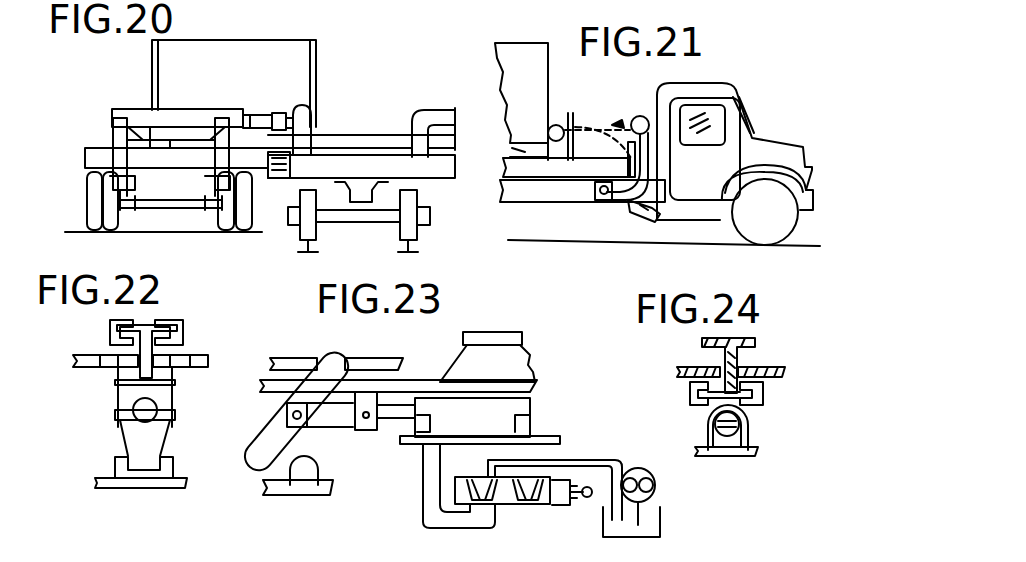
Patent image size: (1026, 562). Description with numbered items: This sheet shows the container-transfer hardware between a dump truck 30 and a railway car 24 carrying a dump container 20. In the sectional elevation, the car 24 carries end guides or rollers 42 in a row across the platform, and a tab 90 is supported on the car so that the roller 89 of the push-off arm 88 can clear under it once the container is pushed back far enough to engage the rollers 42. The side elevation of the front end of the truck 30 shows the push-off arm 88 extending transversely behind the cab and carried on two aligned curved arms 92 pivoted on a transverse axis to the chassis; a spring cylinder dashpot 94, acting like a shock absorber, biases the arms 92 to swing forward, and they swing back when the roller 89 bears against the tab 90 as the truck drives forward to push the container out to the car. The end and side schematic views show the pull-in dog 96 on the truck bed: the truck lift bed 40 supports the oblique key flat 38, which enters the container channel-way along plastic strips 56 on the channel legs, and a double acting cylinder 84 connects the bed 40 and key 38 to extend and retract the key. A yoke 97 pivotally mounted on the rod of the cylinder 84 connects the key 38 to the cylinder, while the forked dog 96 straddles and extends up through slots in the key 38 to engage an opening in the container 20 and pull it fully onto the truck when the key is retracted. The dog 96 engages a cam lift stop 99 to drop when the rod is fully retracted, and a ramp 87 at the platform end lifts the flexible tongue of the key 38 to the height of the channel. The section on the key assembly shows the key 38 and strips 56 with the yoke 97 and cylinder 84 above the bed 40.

In FIG. 20, the dump container 20 is at (152, 58).
In FIG. 22, the dump container 20 is at (103, 366).
In FIG. 23, the dump container 20 is at (282, 358).
In FIG. 24, the dump container 20 is at (684, 369).
In FIG. 20, the railway car 24 is at (432, 180).
In FIG. 23, the railway car 24 is at (355, 348).
In FIG. 20, the dump truck 30 is at (92, 203).
In FIG. 21, the dump truck 30 is at (738, 90).
In FIG. 22, the key flat 38 is at (145, 327).
In FIG. 23, the key flat 38 is at (520, 348).
In FIG. 24, the key flat 38 is at (758, 345).
In FIG. 22, the lift bed 40 is at (142, 488).
In FIG. 23, the lift bed 40 is at (269, 494).
In FIG. 24, the lift bed 40 is at (750, 457).
In FIG. 20, the end guides or rollers 42 is at (330, 135).
In FIG. 22, the plastic strips 56 is at (110, 331).
In FIG. 24, the plastic strips 56 is at (690, 395).
In FIG. 22, the double acting cylinder 84 is at (150, 398).
In FIG. 23, the double acting cylinder 84 is at (530, 410).
In FIG. 24, the double acting cylinder 84 is at (750, 445).
In FIG. 20, the ramp 87 is at (280, 168).
In FIG. 20, the push-off arm 88 is at (136, 108).
In FIG. 21, the push-off arm 88 is at (652, 117).
In FIG. 20, the roller 89 is at (278, 101).
In FIG. 20, the tab 90 is at (286, 108).
In FIG. 21, the tab 90 is at (570, 85).
In FIG. 20, the curved arms 92 is at (113, 141).
In FIG. 21, the curved arms 92 is at (600, 201).
In FIG. 21, the spring cylinder dashpot 94 is at (650, 217).
In FIG. 22, the dog 96 is at (125, 441).
In FIG. 23, the dog 96 is at (259, 470).
In FIG. 23, the yoke 97 is at (358, 432).
In FIG. 24, the yoke 97 is at (748, 417).
In FIG. 22, the cam lift stop 99 is at (113, 469).
In FIG. 23, the cam lift stop 99 is at (308, 480).